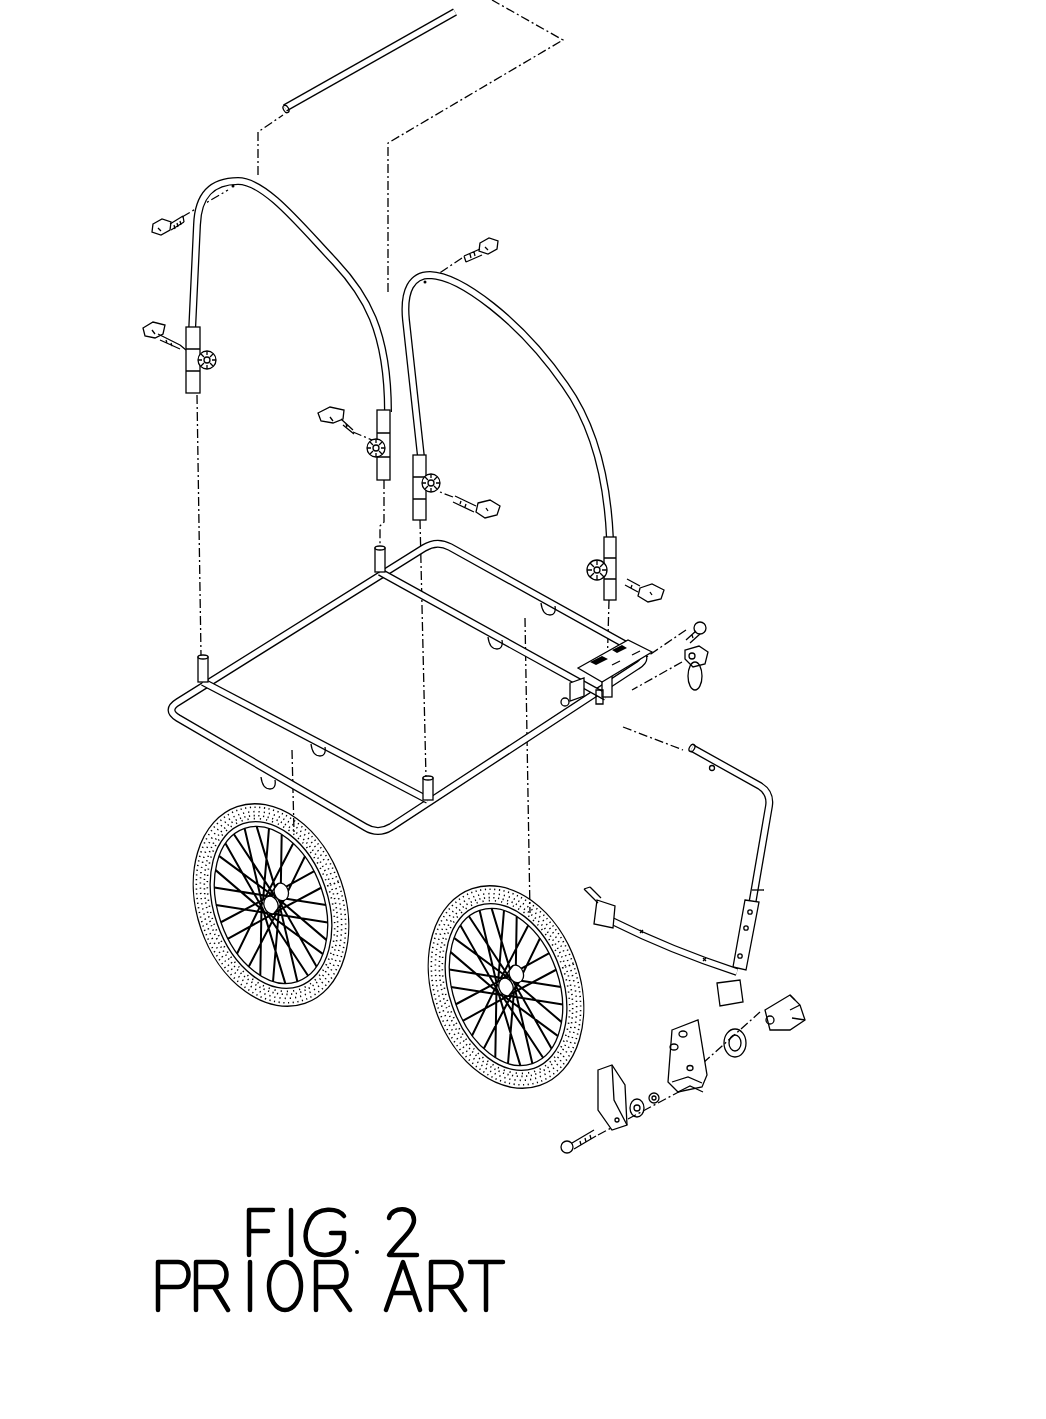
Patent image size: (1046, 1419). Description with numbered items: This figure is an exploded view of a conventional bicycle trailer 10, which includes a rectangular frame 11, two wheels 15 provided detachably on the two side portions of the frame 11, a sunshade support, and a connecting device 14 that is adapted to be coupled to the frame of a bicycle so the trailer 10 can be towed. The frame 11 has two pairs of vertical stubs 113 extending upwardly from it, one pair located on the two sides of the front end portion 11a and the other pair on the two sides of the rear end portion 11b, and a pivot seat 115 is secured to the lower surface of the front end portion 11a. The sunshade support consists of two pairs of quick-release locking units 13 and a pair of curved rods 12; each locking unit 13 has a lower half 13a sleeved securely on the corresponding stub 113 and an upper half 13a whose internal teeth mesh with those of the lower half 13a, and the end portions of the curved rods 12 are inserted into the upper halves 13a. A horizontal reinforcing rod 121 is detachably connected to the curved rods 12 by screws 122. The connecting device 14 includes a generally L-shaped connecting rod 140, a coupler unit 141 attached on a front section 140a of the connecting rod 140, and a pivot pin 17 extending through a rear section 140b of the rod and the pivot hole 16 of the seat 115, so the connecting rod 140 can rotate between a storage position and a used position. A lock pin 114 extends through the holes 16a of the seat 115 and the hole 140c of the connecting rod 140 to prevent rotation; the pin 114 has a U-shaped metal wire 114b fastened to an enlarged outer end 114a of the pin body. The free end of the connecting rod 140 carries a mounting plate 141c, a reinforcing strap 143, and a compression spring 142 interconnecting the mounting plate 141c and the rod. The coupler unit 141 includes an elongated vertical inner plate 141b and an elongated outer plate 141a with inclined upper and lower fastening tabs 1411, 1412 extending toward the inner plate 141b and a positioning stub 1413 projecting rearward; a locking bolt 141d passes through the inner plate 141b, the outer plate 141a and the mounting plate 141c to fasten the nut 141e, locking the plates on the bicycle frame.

The bicycle trailer 10 is at (423, 360).
The rectangular frame 11 is at (389, 696).
The front end portion 11a is at (470, 788).
The rear end portion 11b is at (261, 640).
The vertical stubs 113 is at (196, 670).
The lock pin 114 is at (751, 628).
The enlarged outer end 114a is at (706, 657).
The U-shaped metal wire 114b is at (712, 645).
The pivot seat 115 is at (616, 688).
The curved rods 12 is at (541, 337).
The horizontal reinforcing rod 121 is at (344, 78).
The screws 122 is at (158, 220).
The quick-release locking units 13 is at (185, 375).
The locking unit half 13a is at (178, 335).
The connecting device 14 is at (717, 854).
The connecting rod 140 is at (769, 820).
The front section 140a is at (757, 897).
The rear section 140b is at (698, 750).
The hole 140c is at (712, 772).
The coupler unit 141 is at (700, 1099).
The upper fastening tab 1411 is at (675, 1047).
The lower fastening tab 1412 is at (700, 1087).
The positioning stub 1413 is at (686, 1068).
The outer plate 141a is at (685, 1104).
The inner plate 141b is at (618, 1132).
The mounting plate 141c is at (715, 989).
The locking bolt 141d is at (568, 1156).
The nut 141e is at (792, 1012).
The compression spring 142 is at (740, 976).
The reinforcing strap 143 is at (750, 946).
The wheels 15 is at (270, 995).
The pivot hole 16 is at (582, 700).
The holes 16a is at (607, 720).
The pivot pin 17 is at (700, 620).